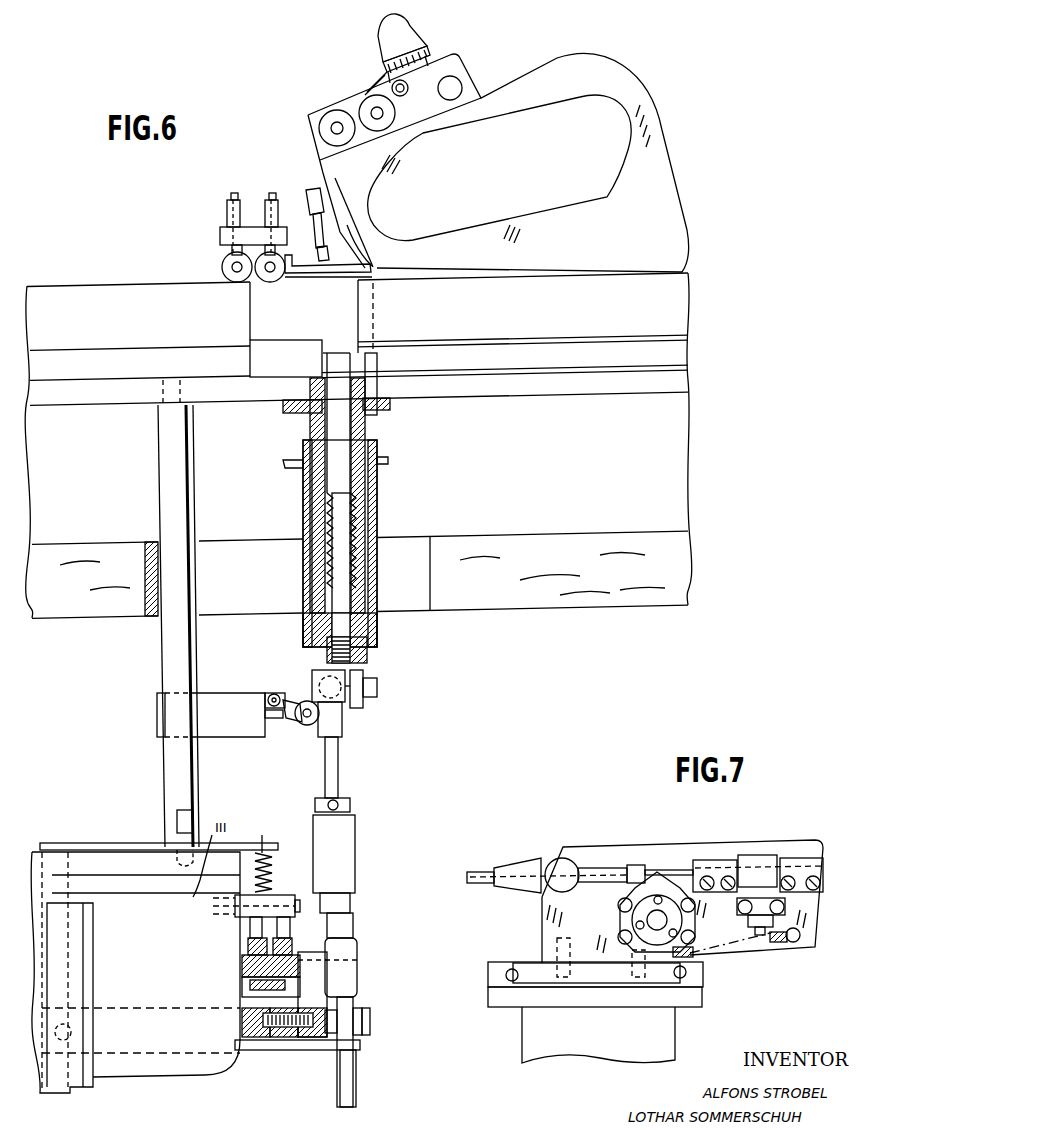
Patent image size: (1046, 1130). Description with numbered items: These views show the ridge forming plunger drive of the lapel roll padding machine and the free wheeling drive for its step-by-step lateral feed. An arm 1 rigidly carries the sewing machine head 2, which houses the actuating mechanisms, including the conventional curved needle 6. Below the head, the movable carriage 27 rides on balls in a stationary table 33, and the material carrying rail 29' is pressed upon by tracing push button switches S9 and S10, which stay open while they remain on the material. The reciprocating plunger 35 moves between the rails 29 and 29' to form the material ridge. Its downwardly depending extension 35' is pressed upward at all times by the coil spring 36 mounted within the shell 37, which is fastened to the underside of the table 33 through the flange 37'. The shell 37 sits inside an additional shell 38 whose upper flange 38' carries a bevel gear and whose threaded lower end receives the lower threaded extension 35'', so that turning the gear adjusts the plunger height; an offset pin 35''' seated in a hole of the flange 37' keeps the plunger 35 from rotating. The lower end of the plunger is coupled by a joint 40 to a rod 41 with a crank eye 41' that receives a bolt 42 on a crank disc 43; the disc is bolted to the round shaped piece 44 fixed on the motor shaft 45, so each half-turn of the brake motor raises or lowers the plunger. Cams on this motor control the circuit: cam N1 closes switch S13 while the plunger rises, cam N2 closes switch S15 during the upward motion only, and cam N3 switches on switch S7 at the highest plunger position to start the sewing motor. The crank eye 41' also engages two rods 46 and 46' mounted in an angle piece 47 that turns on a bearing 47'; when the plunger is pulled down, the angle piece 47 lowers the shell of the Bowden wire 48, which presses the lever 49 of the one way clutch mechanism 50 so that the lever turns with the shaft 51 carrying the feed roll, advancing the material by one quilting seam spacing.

In FIG. 6, the arm 1 is at (358, 560).
In FIG. 6, the sewing machine head 2 is at (528, 88).
In FIG. 6, the curved needle 6 is at (310, 190).
In FIG. 6, the push button switch S9 is at (220, 265).
In FIG. 6, the push button switch S10 is at (322, 282).
In FIG. 6, the material carrying rail 29' is at (138, 302).
In FIG. 6, the material carrying rail 29 is at (523, 318).
In FIG. 6, the carriage 27 is at (465, 350).
In FIG. 6, the stationary table 33 is at (533, 387).
In FIG. 6, the plunger 35 is at (286, 352).
In FIG. 6, the downwardly depending extension 35' is at (310, 498).
In FIG. 6, the lower threaded extension 35'' is at (320, 652).
In FIG. 6, the offset downwardly extending pin 35''' is at (398, 381).
In FIG. 6, the coil spring 36 is at (350, 512).
In FIG. 6, the shell 37 is at (379, 495).
In FIG. 6, the flange 37' is at (316, 411).
In FIG. 6, the additional shell 38 is at (321, 543).
In FIG. 6, the upper flange 38' is at (314, 469).
In FIG. 6, the cam N3 is at (312, 687).
In FIG. 6, the joint 40 is at (377, 685).
In FIG. 6, the rod 41 is at (345, 825).
In FIG. 6, the switch S7 is at (233, 728).
In FIG. 6, the switch S15 is at (250, 928).
In FIG. 6, the switch S13 is at (284, 930).
In FIG. 6, the cam N2 is at (248, 953).
In FIG. 6, the shaft 45 is at (245, 1006).
In FIG. 6, the bearing 47' is at (89, 1036).
In FIG. 6, the round shaped piece 44 is at (253, 1038).
In FIG. 6, the cam N1 is at (283, 1038).
In FIG. 6, the crank disc 43 is at (313, 1038).
In FIG. 6, the bolt 42 is at (357, 961).
In FIG. 6, the crank eye 41' is at (363, 969).
In FIG. 6, the rod 46 is at (378, 1039).
In FIG. 6, the rod 46' is at (366, 1021).
In FIG. 6, the angle piece 47 is at (365, 1052).
In FIG. 6, the Bowden wire 48 is at (342, 1088).
In FIG. 7, the Bowden wire 48 is at (480, 870).
In FIG. 7, the lever 49 is at (660, 867).
In FIG. 7, the one way clutch mechanism 50 is at (640, 920).
In FIG. 7, the shaft 51 is at (667, 920).